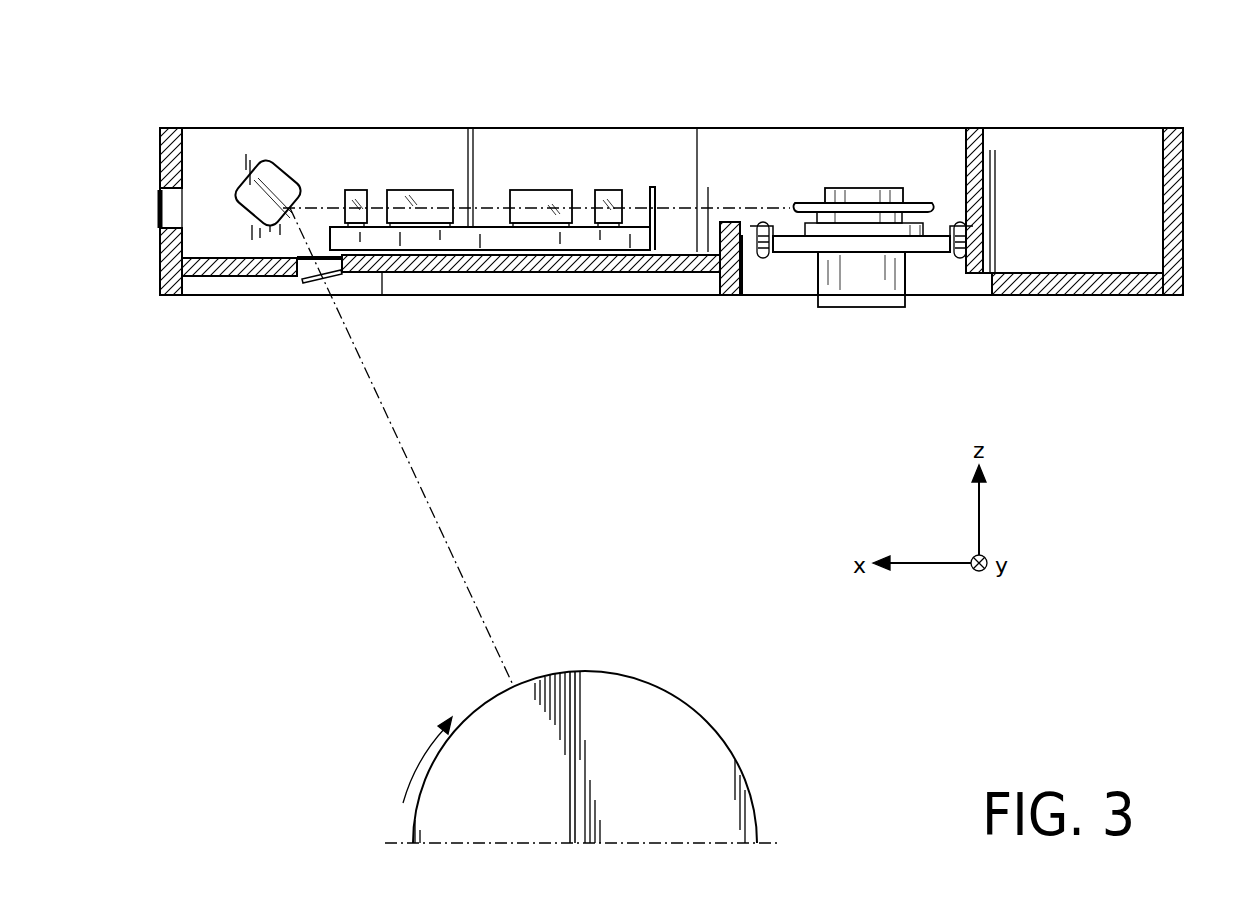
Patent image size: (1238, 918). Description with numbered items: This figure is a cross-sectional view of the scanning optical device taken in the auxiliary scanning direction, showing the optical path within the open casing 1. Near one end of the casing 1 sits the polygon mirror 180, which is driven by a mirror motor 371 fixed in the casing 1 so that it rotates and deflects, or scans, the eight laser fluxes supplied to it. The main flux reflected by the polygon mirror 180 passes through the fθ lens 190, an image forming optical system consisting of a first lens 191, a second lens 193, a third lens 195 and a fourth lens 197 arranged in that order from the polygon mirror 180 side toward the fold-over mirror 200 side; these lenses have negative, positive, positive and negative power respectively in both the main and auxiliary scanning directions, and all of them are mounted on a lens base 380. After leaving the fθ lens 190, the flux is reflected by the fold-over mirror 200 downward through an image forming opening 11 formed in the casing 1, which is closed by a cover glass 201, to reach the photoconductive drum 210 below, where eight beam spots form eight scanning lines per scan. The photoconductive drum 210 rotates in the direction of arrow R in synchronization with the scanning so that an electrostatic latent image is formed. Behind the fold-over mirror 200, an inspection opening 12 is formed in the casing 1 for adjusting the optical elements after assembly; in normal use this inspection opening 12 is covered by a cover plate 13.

The casing 1 is at (1175, 220).
The image forming opening 11 is at (300, 283).
The inspection opening 12 is at (160, 193).
The cover plate 13 is at (160, 228).
The polygon mirror 180 is at (876, 188).
The fθ lens 190 is at (630, 75).
The first lens 191 is at (610, 190).
The second lens 193 is at (540, 190).
The third lens 195 is at (418, 190).
The fourth lens 197 is at (353, 190).
The fold-over mirror 200 is at (278, 160).
The cover glass 201 is at (320, 288).
The photoconductive drum 210 is at (730, 700).
The mirror motor 371 is at (863, 283).
The lens base 380 is at (523, 240).